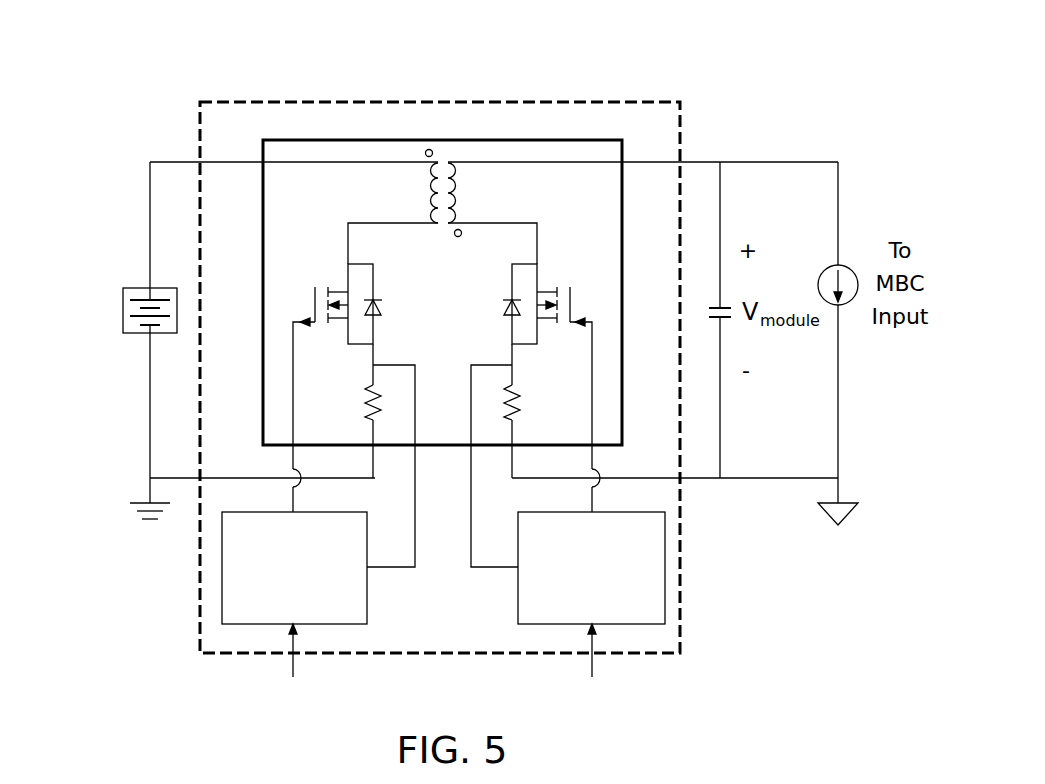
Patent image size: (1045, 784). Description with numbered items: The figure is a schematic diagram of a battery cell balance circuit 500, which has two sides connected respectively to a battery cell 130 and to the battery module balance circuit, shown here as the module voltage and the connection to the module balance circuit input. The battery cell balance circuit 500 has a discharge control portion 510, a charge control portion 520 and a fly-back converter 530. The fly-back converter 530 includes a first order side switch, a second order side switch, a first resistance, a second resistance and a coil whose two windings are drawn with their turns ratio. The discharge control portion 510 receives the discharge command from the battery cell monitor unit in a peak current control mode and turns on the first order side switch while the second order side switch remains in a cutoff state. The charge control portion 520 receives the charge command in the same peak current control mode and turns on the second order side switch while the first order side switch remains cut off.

The battery cell 130 is at (123, 310).
The battery cell balance circuit 500 is at (361, 100).
The discharge control portion 510 is at (222, 598).
The charge control portion 520 is at (665, 598).
The fly-back converter 530 is at (472, 140).